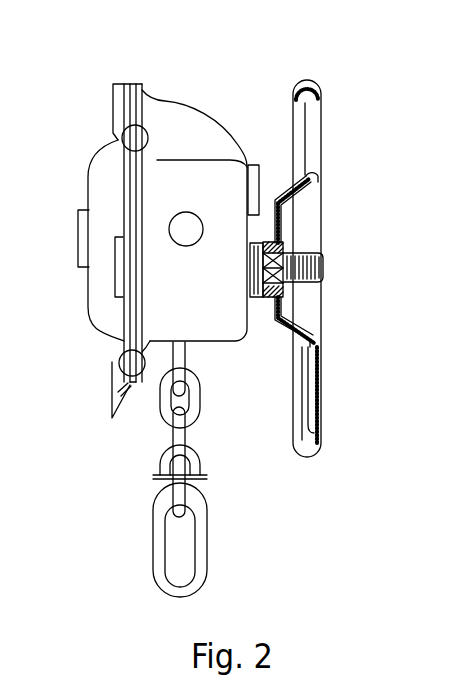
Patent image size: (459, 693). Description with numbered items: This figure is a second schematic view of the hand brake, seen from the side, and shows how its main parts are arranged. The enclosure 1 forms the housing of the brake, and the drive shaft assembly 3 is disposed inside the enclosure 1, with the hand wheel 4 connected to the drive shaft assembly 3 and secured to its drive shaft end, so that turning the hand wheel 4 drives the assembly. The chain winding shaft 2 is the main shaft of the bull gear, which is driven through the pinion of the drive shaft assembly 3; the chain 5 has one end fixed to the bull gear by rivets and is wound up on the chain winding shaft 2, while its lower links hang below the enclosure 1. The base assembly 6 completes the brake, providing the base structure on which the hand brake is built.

The enclosure 1 is at (172, 128).
The chain winding shaft 2 is at (254, 178).
The drive shaft assembly 3 is at (322, 276).
The hand wheel 4 is at (312, 85).
The chain 5 is at (182, 425).
The base assembly 6 is at (132, 112).